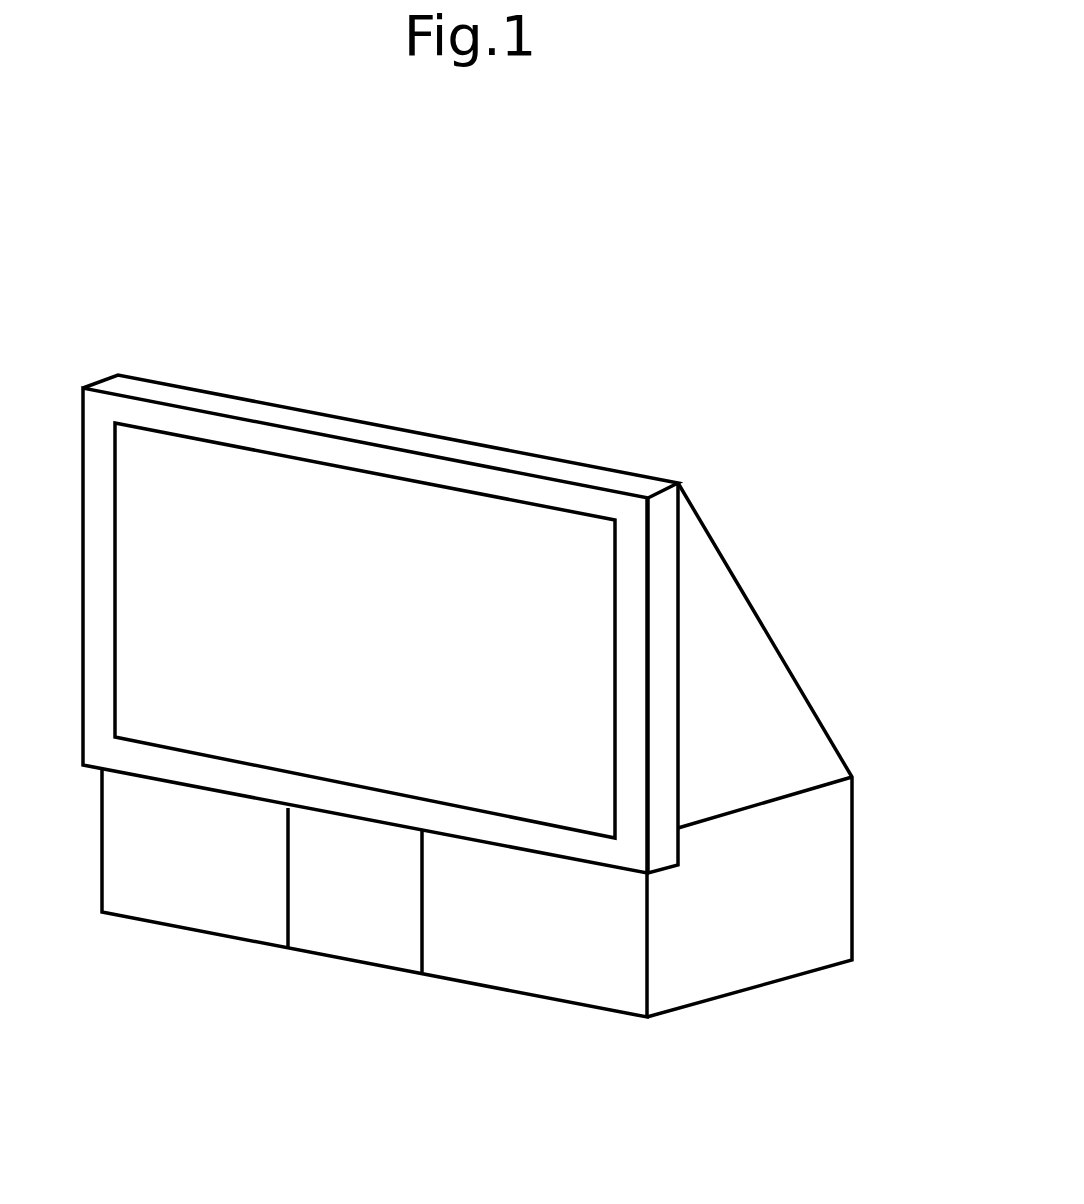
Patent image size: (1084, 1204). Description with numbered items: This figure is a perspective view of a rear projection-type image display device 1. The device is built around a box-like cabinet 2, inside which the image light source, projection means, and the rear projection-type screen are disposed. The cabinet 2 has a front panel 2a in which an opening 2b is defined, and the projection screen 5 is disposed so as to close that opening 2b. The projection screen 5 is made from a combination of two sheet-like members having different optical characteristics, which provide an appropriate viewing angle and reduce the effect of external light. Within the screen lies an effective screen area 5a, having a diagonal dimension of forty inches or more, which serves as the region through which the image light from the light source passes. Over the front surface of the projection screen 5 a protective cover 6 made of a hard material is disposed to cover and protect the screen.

The rear projection-type image display device 1 is at (732, 498).
The cabinet 2 is at (820, 718).
The front panel 2a is at (628, 668).
The opening 2b is at (528, 830).
The projection screen 5 is at (300, 519).
The effective screen area 5a is at (445, 518).
The protective cover 6 is at (212, 457).